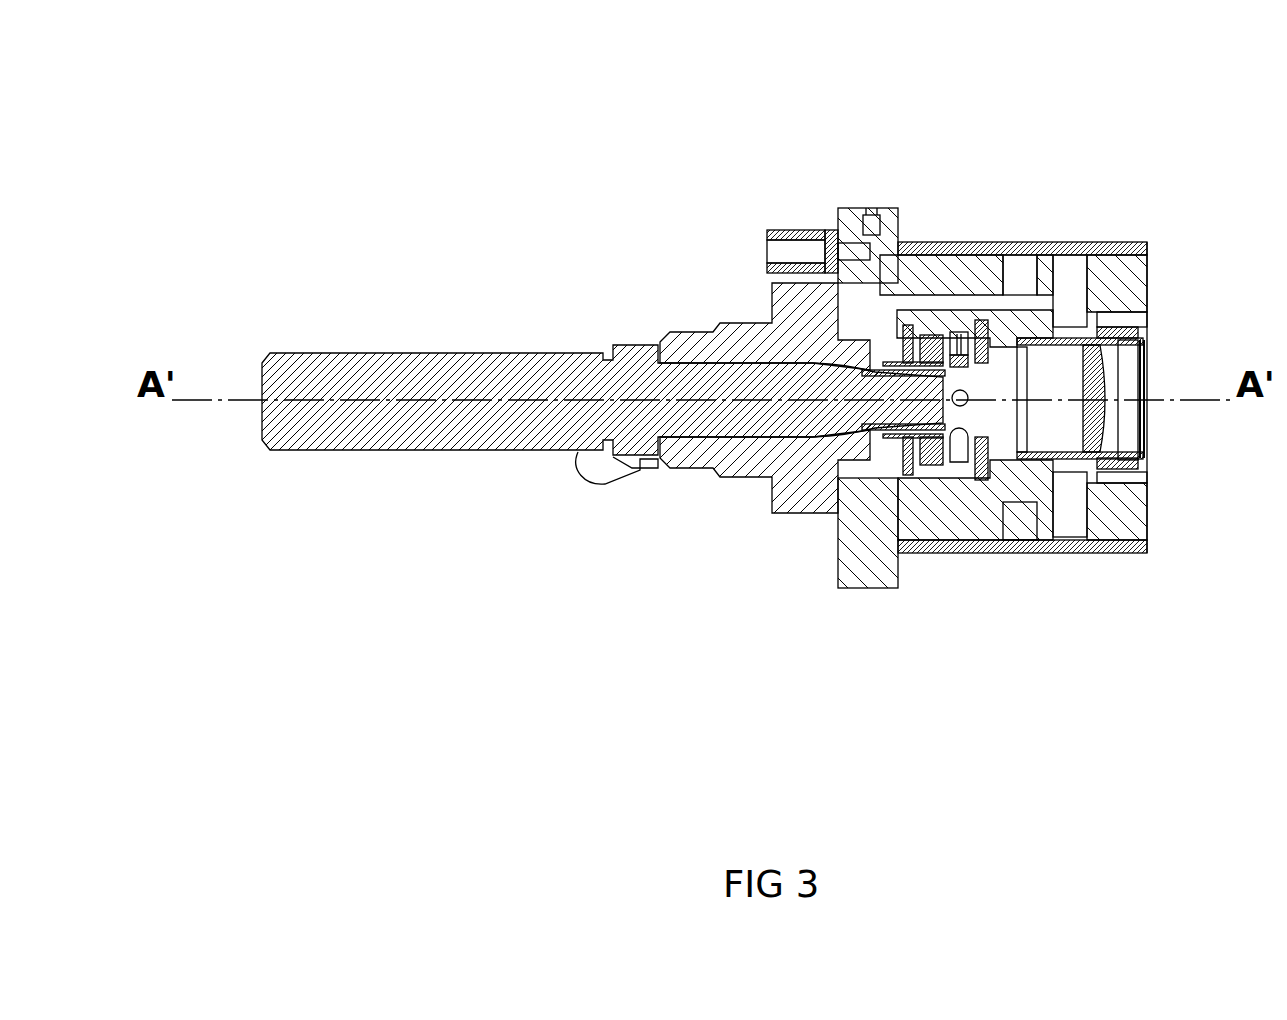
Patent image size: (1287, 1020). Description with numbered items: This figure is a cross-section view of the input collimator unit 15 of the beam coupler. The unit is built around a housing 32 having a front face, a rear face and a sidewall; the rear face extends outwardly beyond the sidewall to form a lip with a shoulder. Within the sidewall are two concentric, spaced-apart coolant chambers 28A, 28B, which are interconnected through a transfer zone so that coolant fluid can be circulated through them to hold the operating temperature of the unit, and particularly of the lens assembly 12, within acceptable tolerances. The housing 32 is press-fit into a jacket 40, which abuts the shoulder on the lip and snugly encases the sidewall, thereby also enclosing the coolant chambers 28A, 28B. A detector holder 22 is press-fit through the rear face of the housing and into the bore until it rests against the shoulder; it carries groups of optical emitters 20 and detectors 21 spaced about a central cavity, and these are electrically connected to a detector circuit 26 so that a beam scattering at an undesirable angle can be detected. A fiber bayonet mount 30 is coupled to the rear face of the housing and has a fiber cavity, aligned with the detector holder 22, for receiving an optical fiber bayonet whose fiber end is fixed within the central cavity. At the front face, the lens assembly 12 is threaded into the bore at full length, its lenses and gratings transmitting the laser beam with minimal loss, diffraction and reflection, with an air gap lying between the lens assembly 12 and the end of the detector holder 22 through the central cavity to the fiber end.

The lens assembly 12 is at (1130, 320).
The input collimator unit 15 is at (886, 745).
The optical emitter 20 is at (960, 448).
The detector 21 is at (960, 360).
The detector holder 22 is at (920, 343).
The detector circuit 26 is at (775, 232).
The coolant chamber 28A is at (1025, 525).
The coolant chamber 28B is at (1070, 280).
The fiber bayonet mount 30 is at (747, 465).
The housing 32 is at (868, 535).
The jacket 40 is at (985, 548).